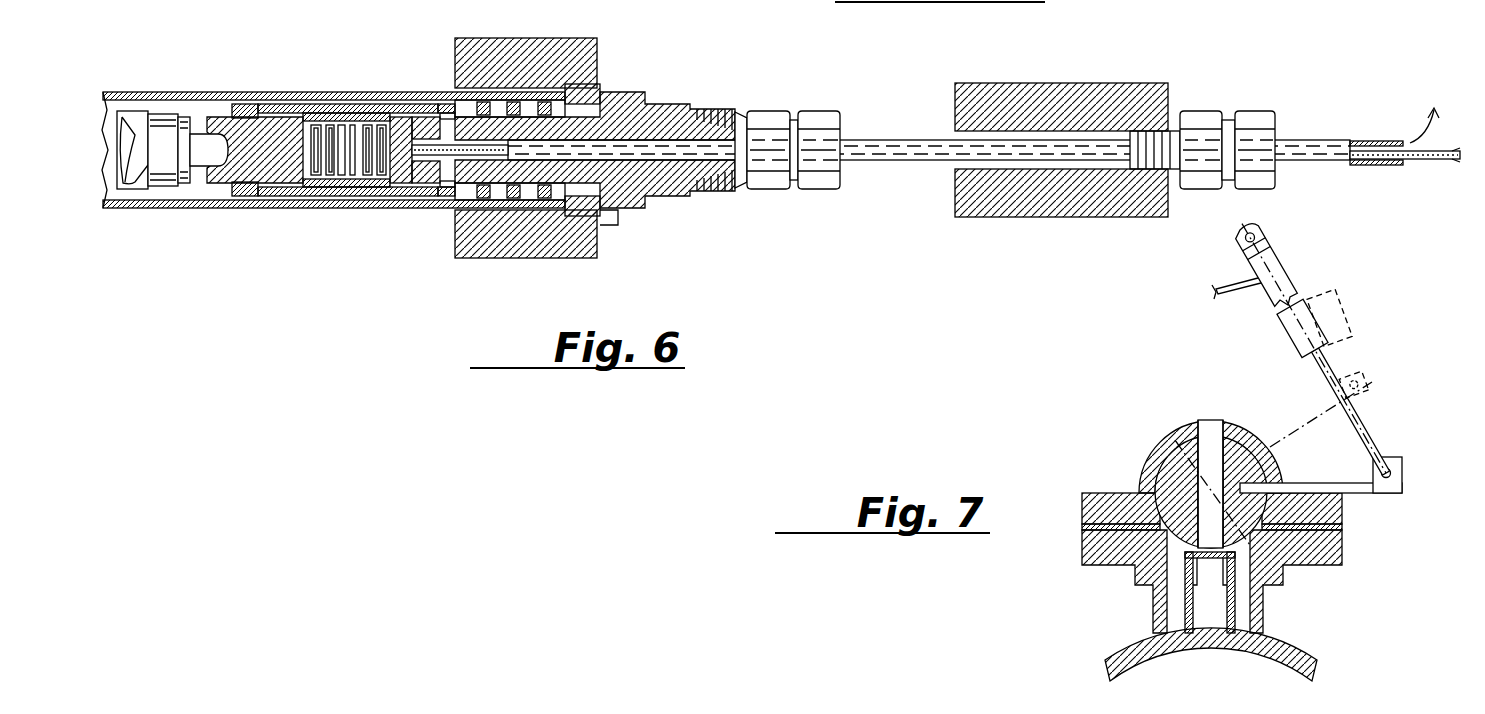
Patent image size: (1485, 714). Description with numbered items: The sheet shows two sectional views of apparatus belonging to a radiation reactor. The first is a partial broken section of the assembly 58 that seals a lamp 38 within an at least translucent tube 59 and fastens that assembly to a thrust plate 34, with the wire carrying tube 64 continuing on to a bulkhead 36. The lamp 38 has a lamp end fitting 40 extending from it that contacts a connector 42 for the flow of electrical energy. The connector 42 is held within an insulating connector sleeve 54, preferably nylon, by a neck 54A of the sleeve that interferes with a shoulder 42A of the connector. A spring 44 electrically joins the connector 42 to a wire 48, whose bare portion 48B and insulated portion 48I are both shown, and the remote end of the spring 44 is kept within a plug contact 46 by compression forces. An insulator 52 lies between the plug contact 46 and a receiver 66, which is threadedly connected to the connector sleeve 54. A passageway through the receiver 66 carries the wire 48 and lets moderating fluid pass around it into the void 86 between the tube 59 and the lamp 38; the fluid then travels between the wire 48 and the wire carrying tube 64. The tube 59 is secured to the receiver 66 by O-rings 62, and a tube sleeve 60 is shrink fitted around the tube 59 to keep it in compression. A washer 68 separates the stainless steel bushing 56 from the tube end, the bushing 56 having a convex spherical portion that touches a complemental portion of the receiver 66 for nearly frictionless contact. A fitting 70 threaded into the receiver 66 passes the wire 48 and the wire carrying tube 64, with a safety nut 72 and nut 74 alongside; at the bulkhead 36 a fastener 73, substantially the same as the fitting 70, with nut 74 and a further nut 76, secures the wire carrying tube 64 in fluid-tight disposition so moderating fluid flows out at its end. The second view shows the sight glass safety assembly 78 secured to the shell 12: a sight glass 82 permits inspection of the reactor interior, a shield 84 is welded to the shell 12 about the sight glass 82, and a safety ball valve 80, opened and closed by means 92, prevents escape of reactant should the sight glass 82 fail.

In FIG. 7, the shell 12 is at (1290, 652).
In FIG. 6, the thrust plate 34 is at (510, 238).
In FIG. 6, the bulkhead 36 is at (1013, 188).
In FIG. 6, the lamp 38 is at (130, 176).
In FIG. 6, the lamp end fitting 40 is at (170, 172).
In FIG. 6, the connector 42 is at (282, 150).
In FIG. 6, the shoulder 42A is at (305, 187).
In FIG. 6, the spring 44 is at (352, 176).
In FIG. 6, the plug contact 46 is at (400, 172).
In FIG. 6, the wire 48 is at (1415, 160).
In FIG. 6, the bare portion of wire 48B is at (395, 117).
In FIG. 6, the insulated portion of wire 48I is at (420, 145).
In FIG. 6, the insulator 52 is at (437, 192).
In FIG. 6, the connector sleeve 54 is at (283, 106).
In FIG. 6, the neck 54A is at (240, 105).
In FIG. 6, the bushing 56 is at (606, 214).
In FIG. 6, the control assembly 58 is at (113, 82).
In FIG. 6, the tube 59 is at (140, 92).
In FIG. 6, the tube sleeve 60 is at (510, 97).
In FIG. 6, the O-rings 62 is at (547, 198).
In FIG. 6, the wire carrying tube 64 is at (890, 142).
In FIG. 6, the receiver 66 is at (655, 112).
In FIG. 6, the washer 68 is at (601, 96).
In FIG. 6, the fitting 70 is at (735, 130).
In FIG. 6, the safety nut 72 is at (820, 122).
In FIG. 6, the fastener 73 is at (767, 120).
In FIG. 6, the nut 74 is at (1198, 122).
In FIG. 6, the nut 76 is at (1253, 122).
In FIG. 7, the sight glass safety assembly 78 is at (1140, 426).
In FIG. 7, the safety ball valve 80 is at (1140, 462).
In FIG. 7, the sight glass 82 is at (1182, 598).
In FIG. 7, the shield 84 is at (1340, 556).
In FIG. 6, the void 86 is at (195, 122).
In FIG. 7, the means for opening and closing safety valve 92 is at (1296, 312).